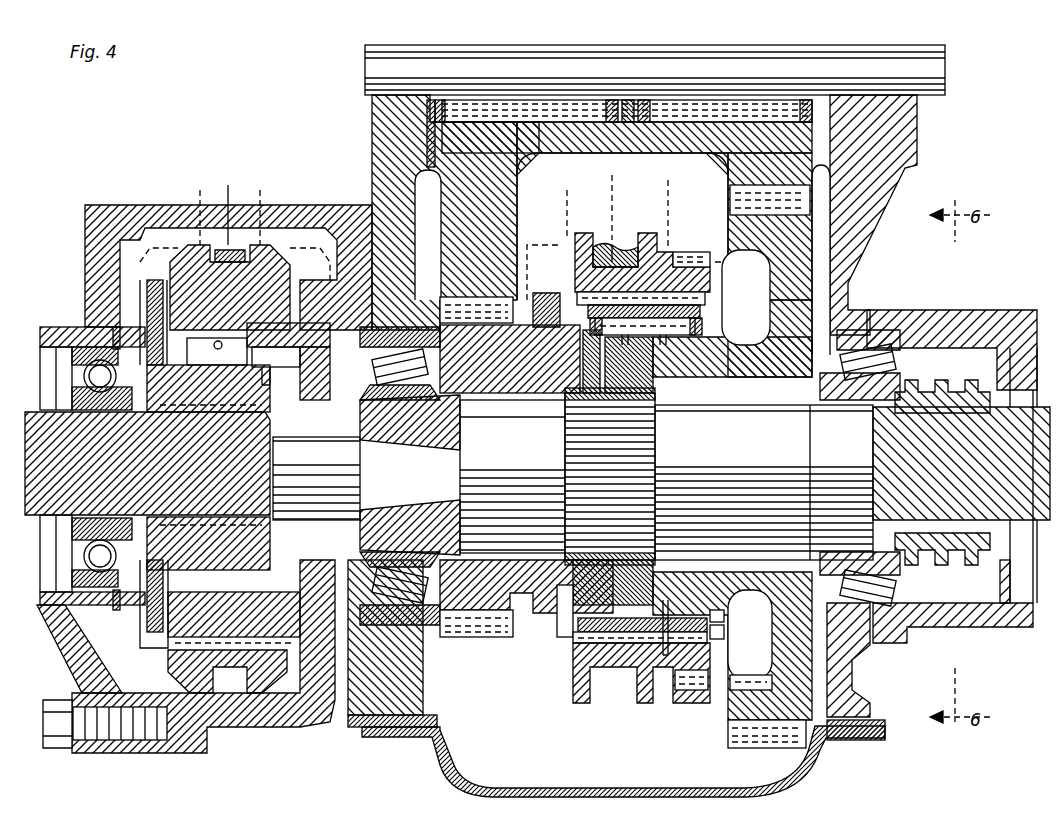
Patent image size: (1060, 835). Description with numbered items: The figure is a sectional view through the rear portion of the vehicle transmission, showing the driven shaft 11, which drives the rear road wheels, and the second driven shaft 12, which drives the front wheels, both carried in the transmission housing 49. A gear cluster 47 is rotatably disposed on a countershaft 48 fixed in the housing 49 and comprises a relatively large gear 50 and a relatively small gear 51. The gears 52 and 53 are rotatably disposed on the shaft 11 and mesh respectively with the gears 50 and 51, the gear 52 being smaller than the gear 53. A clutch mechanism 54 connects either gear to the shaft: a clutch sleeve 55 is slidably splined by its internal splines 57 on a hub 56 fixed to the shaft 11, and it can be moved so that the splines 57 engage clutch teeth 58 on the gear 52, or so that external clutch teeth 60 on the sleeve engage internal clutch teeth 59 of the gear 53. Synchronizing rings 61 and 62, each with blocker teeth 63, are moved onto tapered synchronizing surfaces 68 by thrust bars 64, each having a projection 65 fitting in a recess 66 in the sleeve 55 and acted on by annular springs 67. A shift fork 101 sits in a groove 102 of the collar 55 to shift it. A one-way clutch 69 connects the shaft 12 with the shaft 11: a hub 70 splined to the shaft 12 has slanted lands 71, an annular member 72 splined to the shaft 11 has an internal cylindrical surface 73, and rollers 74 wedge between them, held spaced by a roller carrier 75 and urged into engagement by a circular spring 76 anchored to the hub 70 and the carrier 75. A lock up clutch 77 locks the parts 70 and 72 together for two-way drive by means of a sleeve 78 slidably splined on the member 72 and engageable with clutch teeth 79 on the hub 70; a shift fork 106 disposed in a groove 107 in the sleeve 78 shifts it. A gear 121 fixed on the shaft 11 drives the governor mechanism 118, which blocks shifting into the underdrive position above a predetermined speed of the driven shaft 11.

The driven shaft 11 is at (1030, 418).
The second driven shaft 12 is at (40, 428).
The gear cluster 47 is at (565, 118).
The countershaft 48 is at (946, 52).
The housing 49 is at (912, 131).
The relatively large gear 50 is at (516, 226).
The relatively small gear 51 is at (729, 195).
The gear 52 is at (500, 361).
The gear 53 is at (805, 272).
The clutch mechanism 54 is at (622, 716).
The clutch sleeve 55 is at (578, 265).
The hub 56 is at (672, 368).
The internal splines 57 is at (702, 300).
The clutch teeth 58 is at (545, 637).
The internal clutch teeth 59 is at (748, 679).
The external clutch teeth 60 is at (695, 691).
The synchronizing ring 61 is at (572, 600).
The synchronizing ring 62 is at (712, 619).
The blocker teeth 63 is at (573, 640).
The thrust bar 64 is at (703, 326).
The projection 65 is at (624, 240).
The recess 66 is at (637, 632).
The annular springs 67 is at (665, 658).
The tapered synchronizing surfaces 68 is at (585, 362).
The one-way clutch 69 is at (165, 340).
The hub 70 is at (212, 395).
The slanted lands 71 is at (218, 555).
The annular member 72 is at (305, 618).
The internal cylindrical surface 73 is at (240, 331).
The rollers 74 is at (296, 331).
The roller carrier 75 is at (283, 358).
The circular spring 76 is at (290, 575).
The lock up clutch 77 is at (157, 672).
The sleeve 78 is at (266, 682).
The clutch teeth 79 is at (157, 640).
The shift fork 101 is at (606, 242).
The groove 102 is at (678, 252).
The shift fork 106 is at (238, 245).
The groove 107 is at (243, 253).
The governor mechanism 118 is at (992, 296).
The gear 121 is at (940, 380).